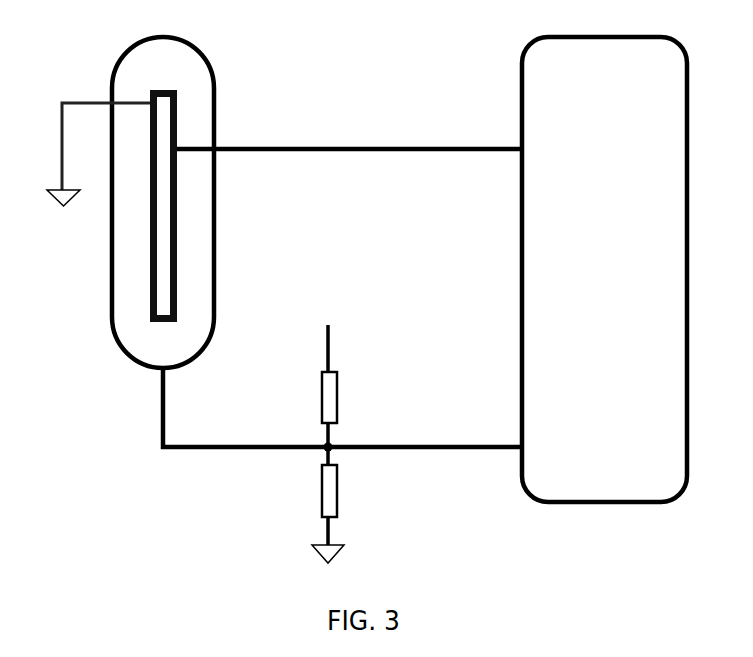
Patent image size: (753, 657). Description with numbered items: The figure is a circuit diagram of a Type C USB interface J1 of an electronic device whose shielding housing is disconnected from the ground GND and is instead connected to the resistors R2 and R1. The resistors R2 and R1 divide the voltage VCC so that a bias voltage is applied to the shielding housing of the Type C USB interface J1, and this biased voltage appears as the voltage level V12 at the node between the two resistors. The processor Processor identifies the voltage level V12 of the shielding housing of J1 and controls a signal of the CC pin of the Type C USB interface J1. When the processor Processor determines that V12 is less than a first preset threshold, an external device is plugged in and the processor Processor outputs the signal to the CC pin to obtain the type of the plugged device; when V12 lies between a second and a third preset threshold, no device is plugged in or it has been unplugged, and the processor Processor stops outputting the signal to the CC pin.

The Type C USB interface J1 is at (156, 199).
The ground GND is at (91, 169).
The CC pin CC is at (349, 130).
The voltage level of the shielding housing V12 is at (342, 410).
The voltage Vcc VCC is at (326, 333).
The resistor R1 is at (311, 409).
The resistor R2 is at (314, 505).
The processor Processor is at (604, 269).